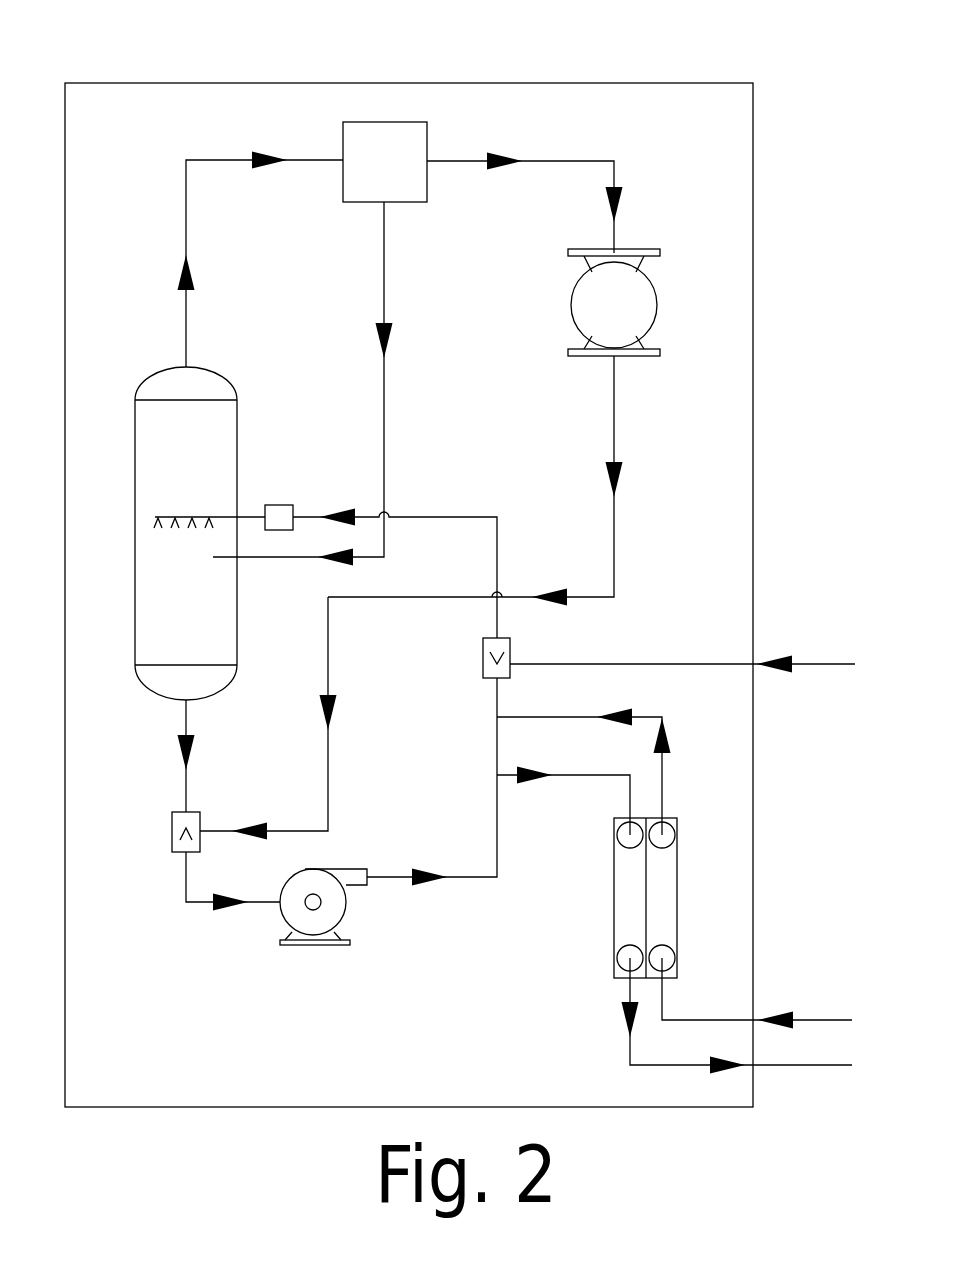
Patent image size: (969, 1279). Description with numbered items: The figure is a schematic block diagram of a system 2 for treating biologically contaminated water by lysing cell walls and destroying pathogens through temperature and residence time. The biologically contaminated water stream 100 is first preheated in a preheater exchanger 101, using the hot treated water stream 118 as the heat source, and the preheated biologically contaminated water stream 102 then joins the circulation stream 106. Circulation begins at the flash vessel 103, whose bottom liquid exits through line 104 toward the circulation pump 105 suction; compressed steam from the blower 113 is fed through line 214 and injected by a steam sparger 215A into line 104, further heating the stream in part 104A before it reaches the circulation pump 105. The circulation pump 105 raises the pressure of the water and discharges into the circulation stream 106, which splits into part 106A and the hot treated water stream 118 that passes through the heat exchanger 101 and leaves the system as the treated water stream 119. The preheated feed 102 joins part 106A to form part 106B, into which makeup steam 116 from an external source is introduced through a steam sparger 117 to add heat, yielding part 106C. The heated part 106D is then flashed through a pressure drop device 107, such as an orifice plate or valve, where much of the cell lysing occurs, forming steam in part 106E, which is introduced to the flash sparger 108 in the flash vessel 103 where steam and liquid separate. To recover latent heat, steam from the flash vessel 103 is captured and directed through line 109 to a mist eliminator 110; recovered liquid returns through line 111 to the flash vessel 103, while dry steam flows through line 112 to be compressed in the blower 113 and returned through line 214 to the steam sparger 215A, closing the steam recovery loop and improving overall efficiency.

The system 2 is at (390, 83).
The biologically contaminated water stream 100 is at (757, 993).
The preheater exchanger 101 is at (667, 918).
The preheated biologically contaminated water stream 102 is at (683, 698).
The flash vessel 103 is at (186, 533).
The line 104 is at (233, 772).
The part of the main circulation stream 104A is at (263, 902).
The circulation pump 105 is at (323, 907).
The circulation stream 106 is at (460, 876).
The part of the main circulation stream 106A is at (497, 747).
The part of the main circulation stream 106B is at (497, 700).
The part of the main circulation stream 106C is at (497, 623).
The heated part of the main circulation stream 106D is at (497, 487).
The part of the circulation stream 106E is at (248, 515).
The pressure drop device 107 is at (310, 489).
The flash sparger 108 is at (176, 513).
The line 109 is at (238, 131).
The mist eliminator 110 is at (385, 162).
The line 111 is at (436, 268).
The line 112 is at (590, 130).
The blower 113 is at (614, 302).
The makeup steam 116 is at (684, 653).
The steam sparger 117 is at (554, 637).
The hot treated water stream 118 is at (613, 745).
The treated water stream 119 is at (738, 1016).
The line 214 is at (664, 403).
The steam sparger 215A is at (172, 833).